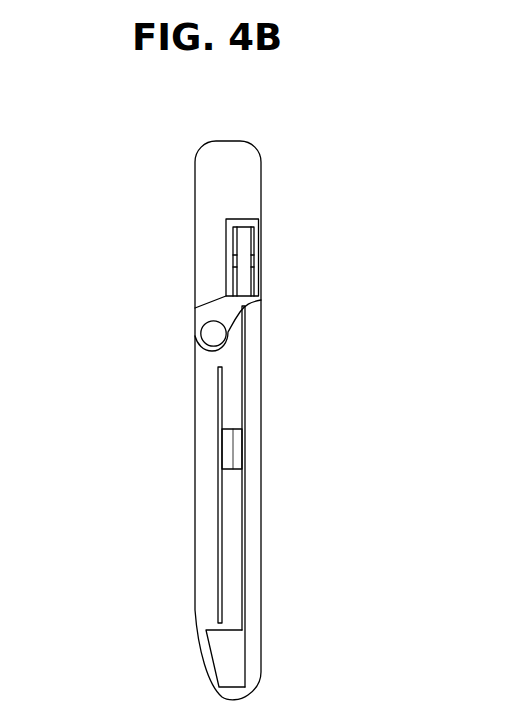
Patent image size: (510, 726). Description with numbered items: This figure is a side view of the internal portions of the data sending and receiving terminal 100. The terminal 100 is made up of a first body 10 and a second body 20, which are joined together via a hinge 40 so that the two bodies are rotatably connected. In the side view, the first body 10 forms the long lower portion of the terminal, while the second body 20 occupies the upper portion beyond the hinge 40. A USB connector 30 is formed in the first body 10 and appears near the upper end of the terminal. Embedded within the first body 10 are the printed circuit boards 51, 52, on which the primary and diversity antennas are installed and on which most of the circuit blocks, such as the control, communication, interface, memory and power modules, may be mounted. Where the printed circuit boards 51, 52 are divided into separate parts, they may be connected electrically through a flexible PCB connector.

The data sending and receiving terminal 100 is at (103, 137).
The first body 10 is at (195, 542).
The second body 20 is at (195, 247).
The USB connector 30 is at (254, 259).
The hinge 40 is at (210, 332).
The printed circuit board 51 is at (247, 437).
The printed circuit board 52 is at (218, 437).